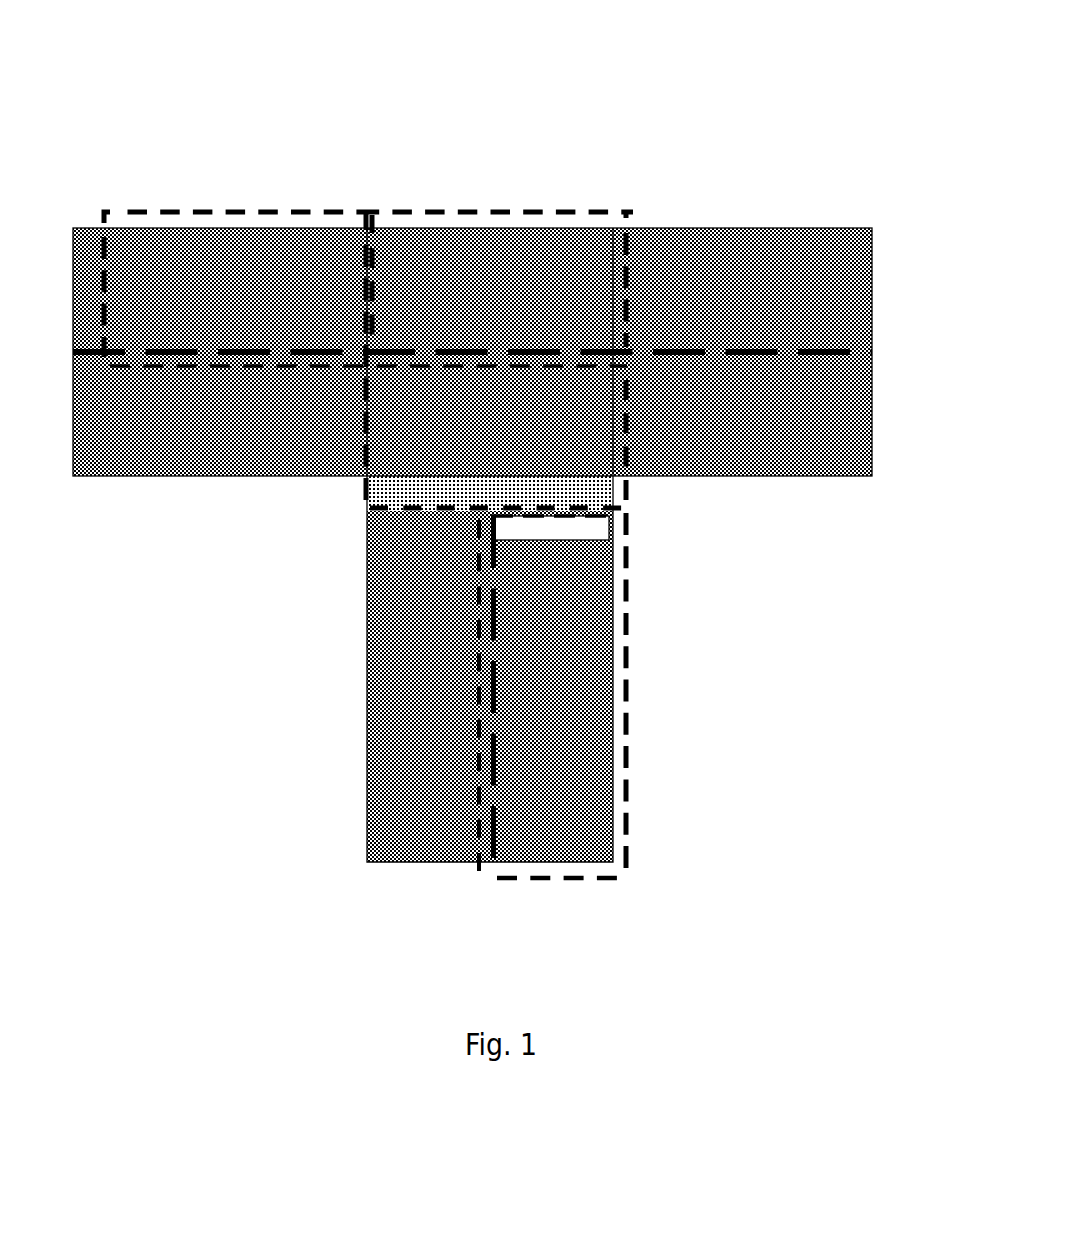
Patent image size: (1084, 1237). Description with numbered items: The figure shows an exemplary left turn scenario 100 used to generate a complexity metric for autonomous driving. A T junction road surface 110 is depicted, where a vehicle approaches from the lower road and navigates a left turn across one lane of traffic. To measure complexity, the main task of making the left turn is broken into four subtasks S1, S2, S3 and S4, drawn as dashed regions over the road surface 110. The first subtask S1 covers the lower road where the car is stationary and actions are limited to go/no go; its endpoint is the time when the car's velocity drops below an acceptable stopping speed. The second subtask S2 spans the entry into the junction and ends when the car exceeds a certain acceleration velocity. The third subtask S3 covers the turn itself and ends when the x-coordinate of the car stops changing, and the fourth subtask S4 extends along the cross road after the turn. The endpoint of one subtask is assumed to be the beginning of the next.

The display device / panel assembly 100 is at (516, 33).
The T junction road surface 110 is at (840, 224).
The subtask 1 S1 is at (636, 598).
The subtask 2 S2 is at (636, 501).
The subtask 3 S3 is at (635, 208).
The subtask 4 S4 is at (236, 209).